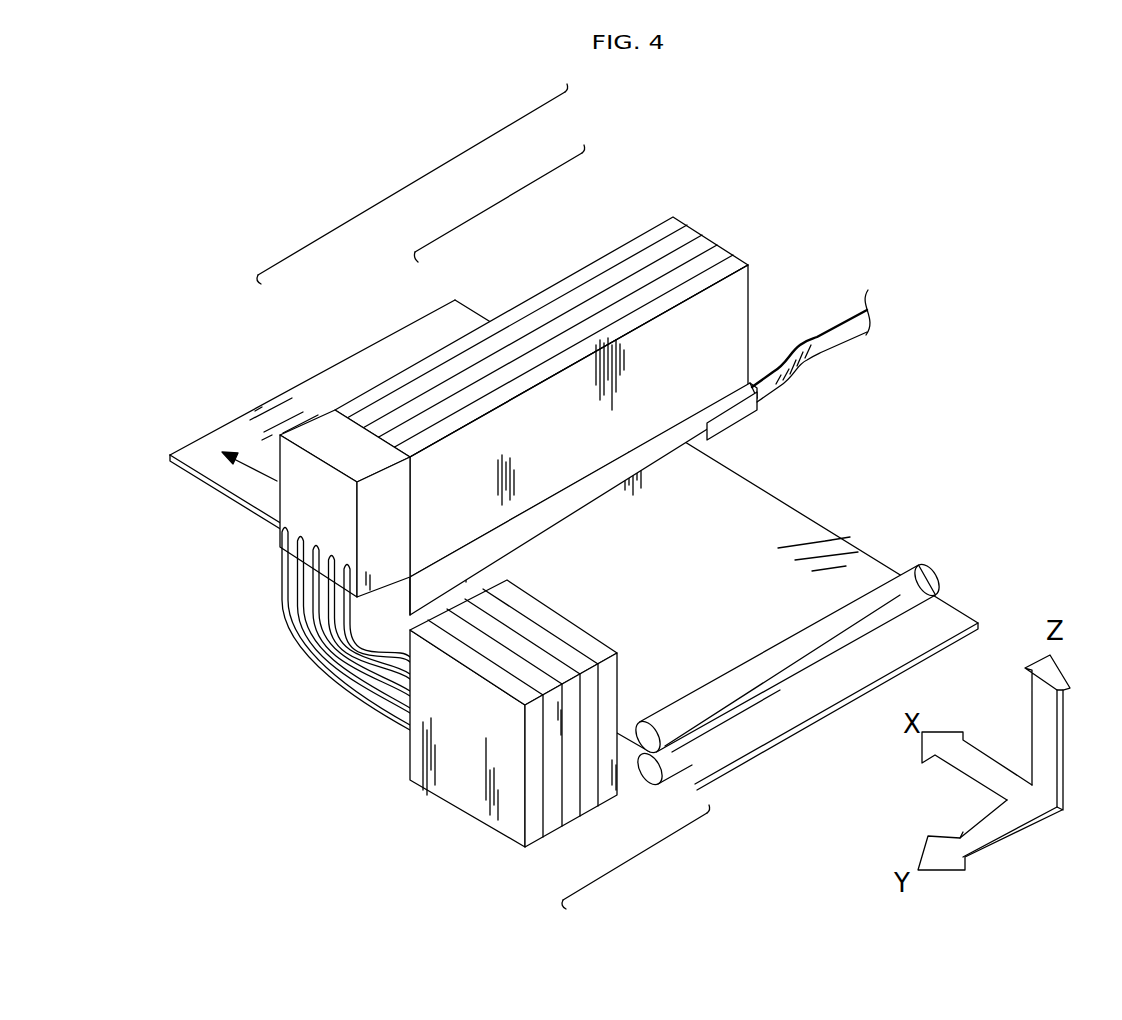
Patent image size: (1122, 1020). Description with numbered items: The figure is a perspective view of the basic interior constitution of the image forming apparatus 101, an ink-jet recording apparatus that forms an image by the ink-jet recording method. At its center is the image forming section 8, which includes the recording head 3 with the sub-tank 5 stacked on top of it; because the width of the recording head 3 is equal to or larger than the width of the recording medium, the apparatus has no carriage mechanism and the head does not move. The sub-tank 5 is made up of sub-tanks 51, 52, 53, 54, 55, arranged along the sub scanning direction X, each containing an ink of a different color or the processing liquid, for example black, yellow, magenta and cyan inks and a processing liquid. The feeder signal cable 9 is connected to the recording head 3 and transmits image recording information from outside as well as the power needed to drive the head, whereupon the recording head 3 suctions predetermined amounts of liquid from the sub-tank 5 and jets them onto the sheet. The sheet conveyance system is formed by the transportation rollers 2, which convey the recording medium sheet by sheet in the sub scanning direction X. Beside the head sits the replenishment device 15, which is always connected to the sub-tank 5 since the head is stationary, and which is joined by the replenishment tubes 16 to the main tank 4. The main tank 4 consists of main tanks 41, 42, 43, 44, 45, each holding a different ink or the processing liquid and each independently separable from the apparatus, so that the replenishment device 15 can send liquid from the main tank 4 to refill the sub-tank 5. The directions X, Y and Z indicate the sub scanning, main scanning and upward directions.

The conveyance roller 2 is at (912, 580).
The recording head 3 is at (490, 548).
The main tank 4 is at (560, 744).
The main tank 41 is at (529, 838).
The main tank 42 is at (550, 825).
The main tank 43 is at (567, 820).
The main tank 44 is at (585, 805).
The main tank 45 is at (610, 787).
The sub-tank 5 is at (502, 203).
The sub-tank 51 is at (502, 320).
The sub-tank 52 is at (527, 320).
The sub-tank 53 is at (565, 318).
The sub-tank 54 is at (614, 312).
The sub-tank 55 is at (650, 313).
The image forming section 8 is at (394, 196).
The feeder signal cable 9 is at (811, 345).
The replenishment device 15 is at (307, 433).
The replenishment tubes 16 is at (367, 700).
The image forming apparatus 101 is at (1041, 405).